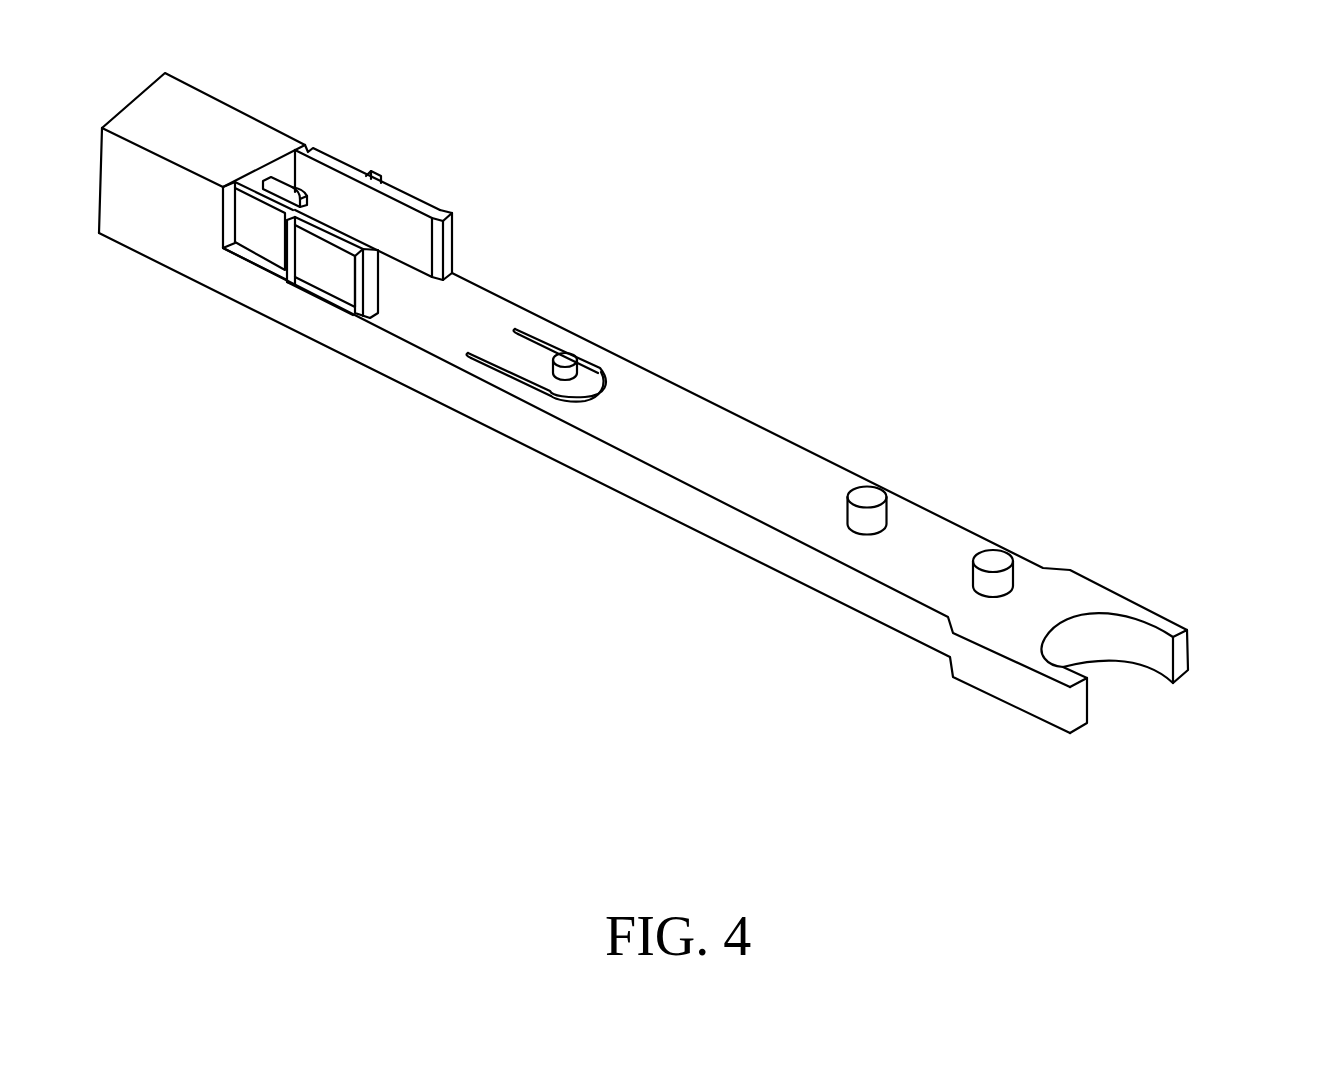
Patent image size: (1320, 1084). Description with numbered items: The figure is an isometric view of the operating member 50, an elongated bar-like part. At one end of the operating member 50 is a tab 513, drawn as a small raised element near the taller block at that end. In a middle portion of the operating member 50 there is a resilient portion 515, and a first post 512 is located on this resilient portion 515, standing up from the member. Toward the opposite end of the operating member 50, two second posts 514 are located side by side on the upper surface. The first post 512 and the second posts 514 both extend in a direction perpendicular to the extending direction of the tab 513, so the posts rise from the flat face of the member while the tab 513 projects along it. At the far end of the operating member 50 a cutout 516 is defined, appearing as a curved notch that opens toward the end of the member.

The operating member 50 is at (598, 523).
The first post 512 is at (568, 356).
The tab 513 is at (296, 193).
The second posts 514 is at (987, 560).
The resilient portion 515 is at (565, 357).
The cutout 516 is at (1107, 637).